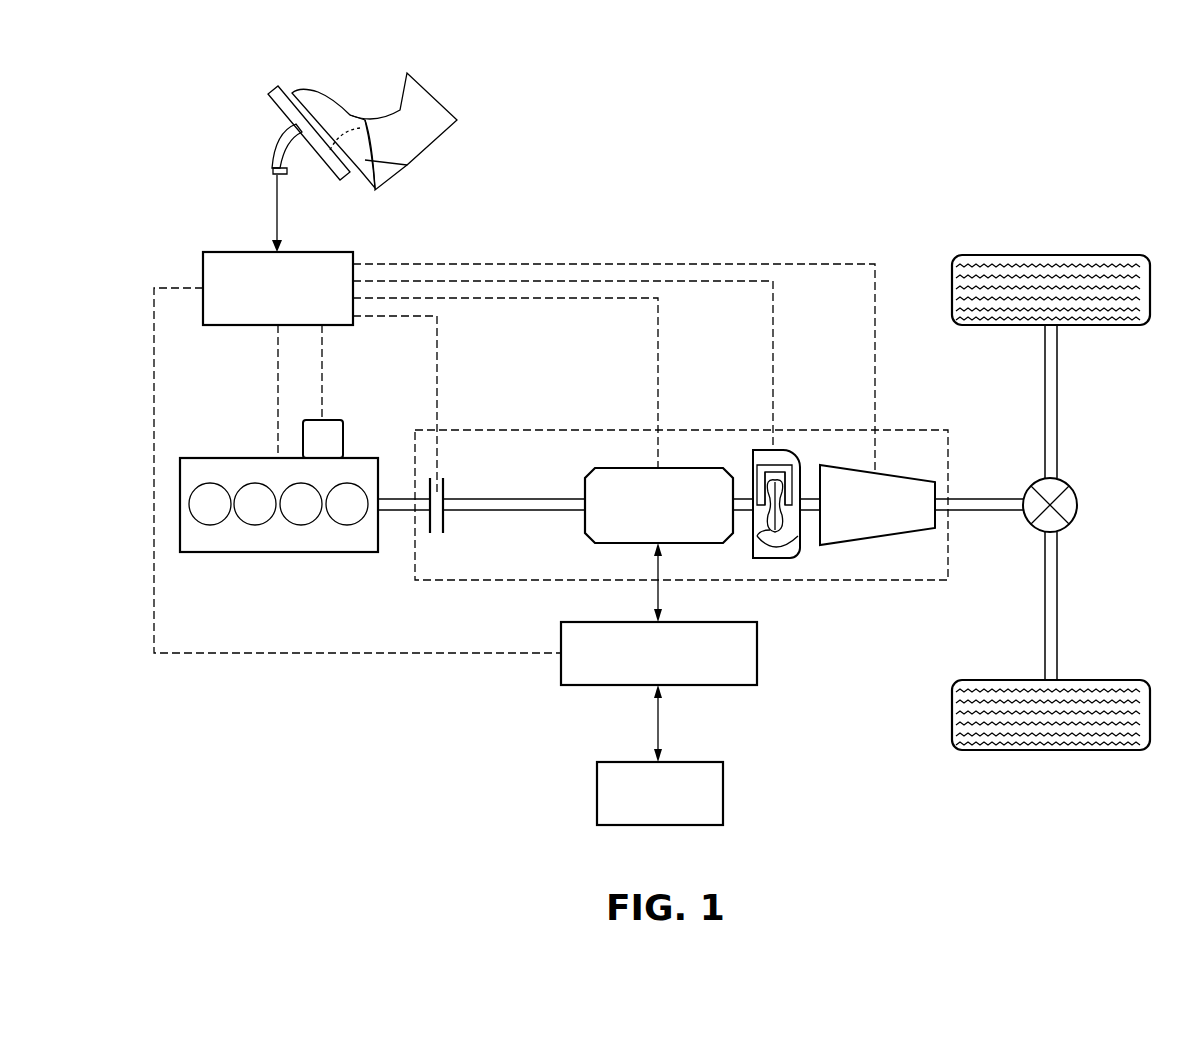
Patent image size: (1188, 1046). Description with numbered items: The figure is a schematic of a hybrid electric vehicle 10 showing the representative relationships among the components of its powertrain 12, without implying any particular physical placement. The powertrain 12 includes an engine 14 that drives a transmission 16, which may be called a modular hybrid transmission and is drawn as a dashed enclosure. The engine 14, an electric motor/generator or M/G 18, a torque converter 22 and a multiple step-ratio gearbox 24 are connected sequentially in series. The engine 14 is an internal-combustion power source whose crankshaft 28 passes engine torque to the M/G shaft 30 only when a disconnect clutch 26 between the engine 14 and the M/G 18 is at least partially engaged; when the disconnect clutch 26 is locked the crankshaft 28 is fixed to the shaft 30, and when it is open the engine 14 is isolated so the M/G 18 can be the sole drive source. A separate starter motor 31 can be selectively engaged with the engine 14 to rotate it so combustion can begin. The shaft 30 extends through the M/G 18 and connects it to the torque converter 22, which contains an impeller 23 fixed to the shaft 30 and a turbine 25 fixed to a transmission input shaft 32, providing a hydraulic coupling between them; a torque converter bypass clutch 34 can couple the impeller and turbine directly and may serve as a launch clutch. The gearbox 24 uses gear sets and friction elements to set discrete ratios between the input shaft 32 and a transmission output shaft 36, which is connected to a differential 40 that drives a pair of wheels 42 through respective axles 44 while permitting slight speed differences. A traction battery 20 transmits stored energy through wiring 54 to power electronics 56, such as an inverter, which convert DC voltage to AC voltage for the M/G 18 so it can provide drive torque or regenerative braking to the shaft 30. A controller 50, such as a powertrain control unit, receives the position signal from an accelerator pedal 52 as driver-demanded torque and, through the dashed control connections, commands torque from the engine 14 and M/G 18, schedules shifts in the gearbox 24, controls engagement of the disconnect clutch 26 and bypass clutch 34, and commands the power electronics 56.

The hybrid electric vehicle 10 is at (812, 168).
The powertrain 12 is at (424, 680).
The engine 14 is at (232, 457).
The transmission 16 is at (737, 428).
The electric motor/generator (M/G) 18 is at (625, 467).
The traction battery 20 is at (725, 790).
The torque converter 22 is at (790, 560).
The impeller 23 is at (793, 545).
The gearbox 24 is at (880, 546).
The turbine 25 is at (757, 548).
The disconnect clutch 26 is at (448, 490).
The crankshaft 28 is at (420, 497).
The M/G shaft 30 is at (526, 498).
The starter motor 31 is at (332, 419).
The transmission input shaft 32 is at (808, 480).
The torque converter bypass clutch 34 is at (775, 455).
The transmission output shaft 36 is at (990, 498).
The differential 40 is at (1080, 505).
The wheels 42 is at (1048, 254).
The axles 44 is at (1060, 402).
The controller 50 is at (240, 251).
The accelerator pedal 52 is at (282, 132).
The wiring 54 is at (661, 728).
The power electronics 56 is at (758, 650).